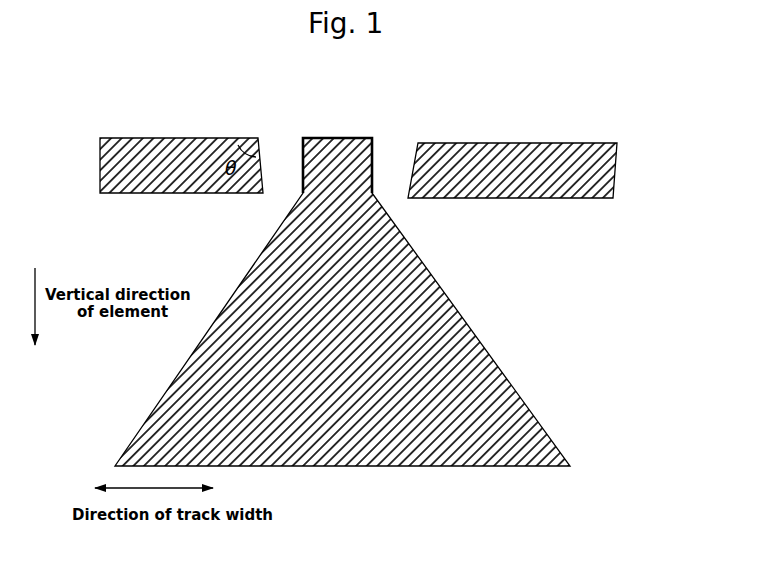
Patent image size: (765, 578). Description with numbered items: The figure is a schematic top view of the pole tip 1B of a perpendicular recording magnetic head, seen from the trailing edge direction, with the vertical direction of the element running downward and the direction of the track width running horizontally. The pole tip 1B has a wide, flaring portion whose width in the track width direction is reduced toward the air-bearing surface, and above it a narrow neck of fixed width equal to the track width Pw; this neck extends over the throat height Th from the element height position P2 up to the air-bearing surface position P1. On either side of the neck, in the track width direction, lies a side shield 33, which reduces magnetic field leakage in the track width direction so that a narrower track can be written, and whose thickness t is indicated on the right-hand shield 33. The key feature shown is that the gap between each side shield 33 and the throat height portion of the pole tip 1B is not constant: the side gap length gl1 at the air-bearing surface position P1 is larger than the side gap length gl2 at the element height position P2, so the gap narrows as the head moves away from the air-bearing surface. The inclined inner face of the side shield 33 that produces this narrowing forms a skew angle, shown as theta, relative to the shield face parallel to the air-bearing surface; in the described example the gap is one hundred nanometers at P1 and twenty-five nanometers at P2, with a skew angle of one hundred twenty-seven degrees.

The side shield 33 is at (118, 193).
The pole tip 1B is at (342, 302).
The track width Pw is at (372, 125).
The throat height Th is at (360, 193).
The air-bearing surface position P1 is at (372, 138).
The element height position P2 is at (372, 193).
The side shield thickness t is at (605, 198).
The side gap length at air-bearing surface position gl1 is at (303, 138).
The side gap length at element height position gl2 is at (303, 193).